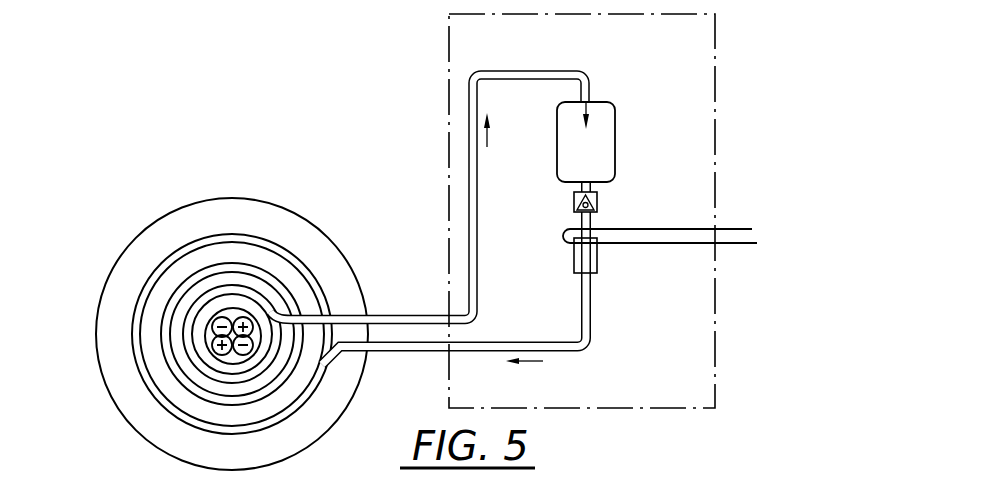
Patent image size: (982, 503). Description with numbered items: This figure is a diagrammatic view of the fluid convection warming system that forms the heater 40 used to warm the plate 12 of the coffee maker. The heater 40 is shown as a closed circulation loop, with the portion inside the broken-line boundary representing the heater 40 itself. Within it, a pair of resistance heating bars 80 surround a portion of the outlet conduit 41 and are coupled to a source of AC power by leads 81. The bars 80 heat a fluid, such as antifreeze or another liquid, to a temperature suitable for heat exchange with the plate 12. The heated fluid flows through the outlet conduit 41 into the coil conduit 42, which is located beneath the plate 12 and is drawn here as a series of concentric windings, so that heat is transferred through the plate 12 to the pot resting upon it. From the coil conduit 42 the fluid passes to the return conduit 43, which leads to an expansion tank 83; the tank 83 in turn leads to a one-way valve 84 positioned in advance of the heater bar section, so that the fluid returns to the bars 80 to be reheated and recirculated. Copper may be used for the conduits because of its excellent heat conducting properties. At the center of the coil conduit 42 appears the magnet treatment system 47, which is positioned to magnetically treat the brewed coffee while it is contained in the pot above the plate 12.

The plate 12 is at (183, 206).
The coil conduit 42 is at (232, 234).
The magnet treatment system 47 is at (207, 343).
The return conduit 43 is at (396, 314).
The outlet conduit 41 is at (403, 353).
The resistance heating bars 80 is at (574, 259).
The leads 81 is at (731, 243).
The one-way valve 84 is at (598, 201).
The expansion tank 83 is at (617, 127).
The heater 40 is at (716, 105).